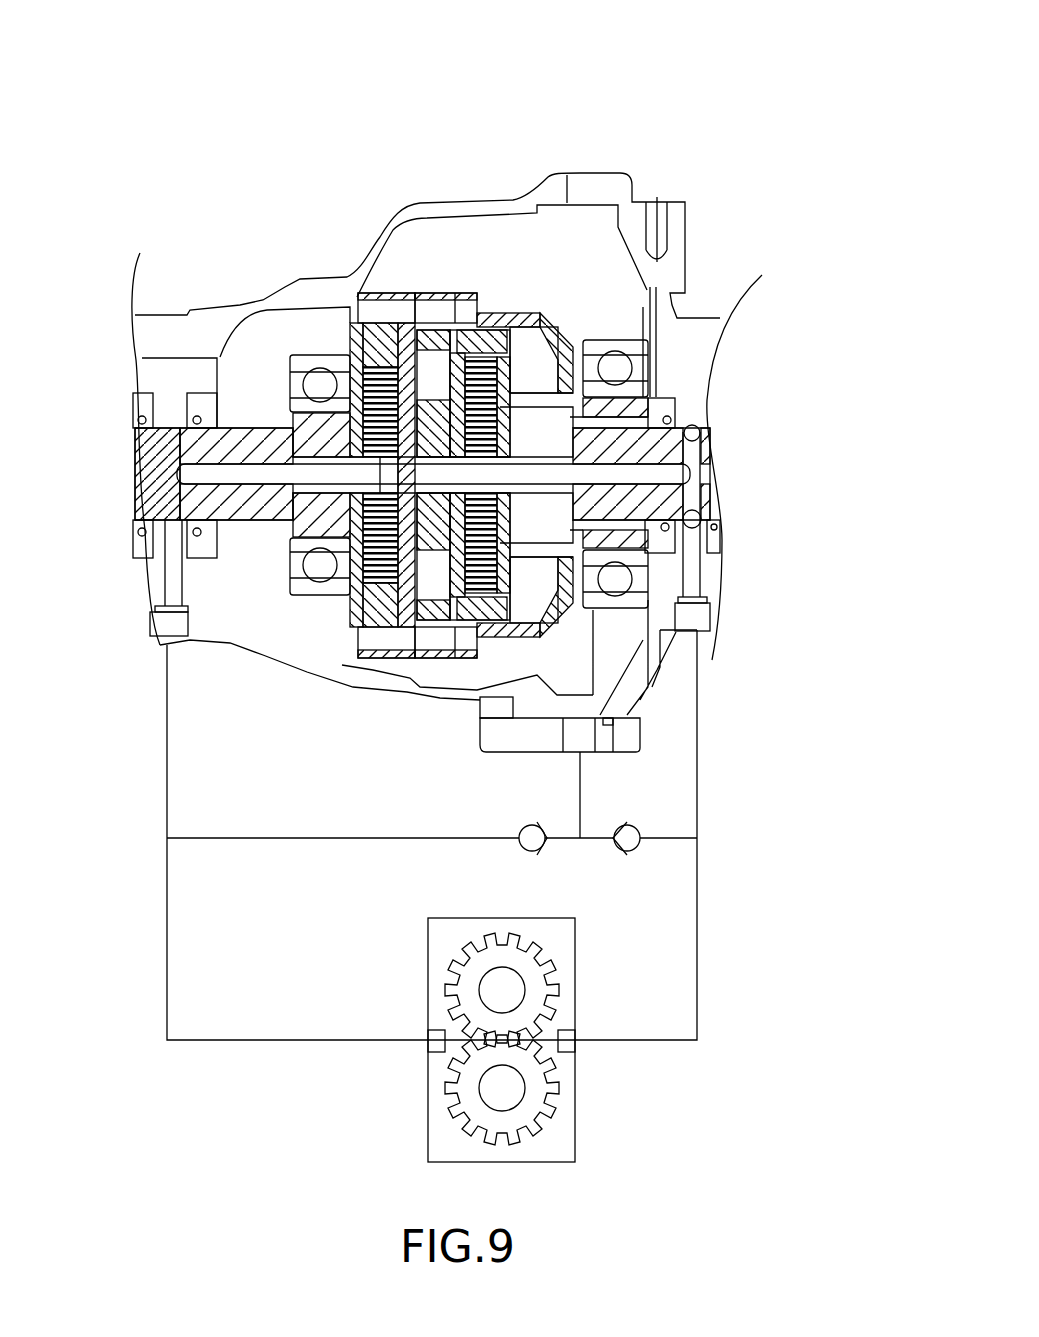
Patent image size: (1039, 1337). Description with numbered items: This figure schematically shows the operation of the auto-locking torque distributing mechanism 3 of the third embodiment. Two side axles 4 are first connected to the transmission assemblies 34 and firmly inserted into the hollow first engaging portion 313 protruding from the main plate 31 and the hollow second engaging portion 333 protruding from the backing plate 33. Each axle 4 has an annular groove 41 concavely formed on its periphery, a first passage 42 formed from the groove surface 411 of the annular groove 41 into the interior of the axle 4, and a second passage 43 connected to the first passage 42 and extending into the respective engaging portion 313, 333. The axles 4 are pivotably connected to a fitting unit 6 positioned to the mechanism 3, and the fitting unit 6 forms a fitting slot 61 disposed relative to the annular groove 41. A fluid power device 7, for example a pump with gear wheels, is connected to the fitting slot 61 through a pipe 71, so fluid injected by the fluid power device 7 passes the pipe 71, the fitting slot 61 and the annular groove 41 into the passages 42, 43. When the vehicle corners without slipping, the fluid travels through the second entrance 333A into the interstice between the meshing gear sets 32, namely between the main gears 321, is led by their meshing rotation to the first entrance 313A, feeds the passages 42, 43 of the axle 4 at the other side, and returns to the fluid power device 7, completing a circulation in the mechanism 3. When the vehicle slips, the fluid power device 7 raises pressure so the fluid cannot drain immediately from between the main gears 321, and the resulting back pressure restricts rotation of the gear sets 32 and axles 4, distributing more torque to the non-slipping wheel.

The auto-locking torque distributing mechanism 3 is at (135, 127).
The side axle 4 is at (235, 423).
The annular groove 41 is at (143, 530).
The groove surface 411 is at (170, 518).
The first passage 42 is at (167, 455).
The second passage 43 is at (210, 470).
The fitting unit 6 is at (158, 637).
The fitting slot 61 is at (163, 583).
The fluid power device 7 is at (428, 1088).
The pipe 71 is at (167, 802).
The main plate 31 is at (450, 290).
The gear set 32 is at (492, 352).
The backing plate 33 is at (387, 288).
The transmission assembly 34 is at (300, 440).
The first engaging portion 313 is at (511, 560).
The first entrance 313A is at (497, 530).
The main gear 321 is at (437, 515).
The second engaging portion 333 is at (363, 450).
The second entrance 333A is at (370, 458).